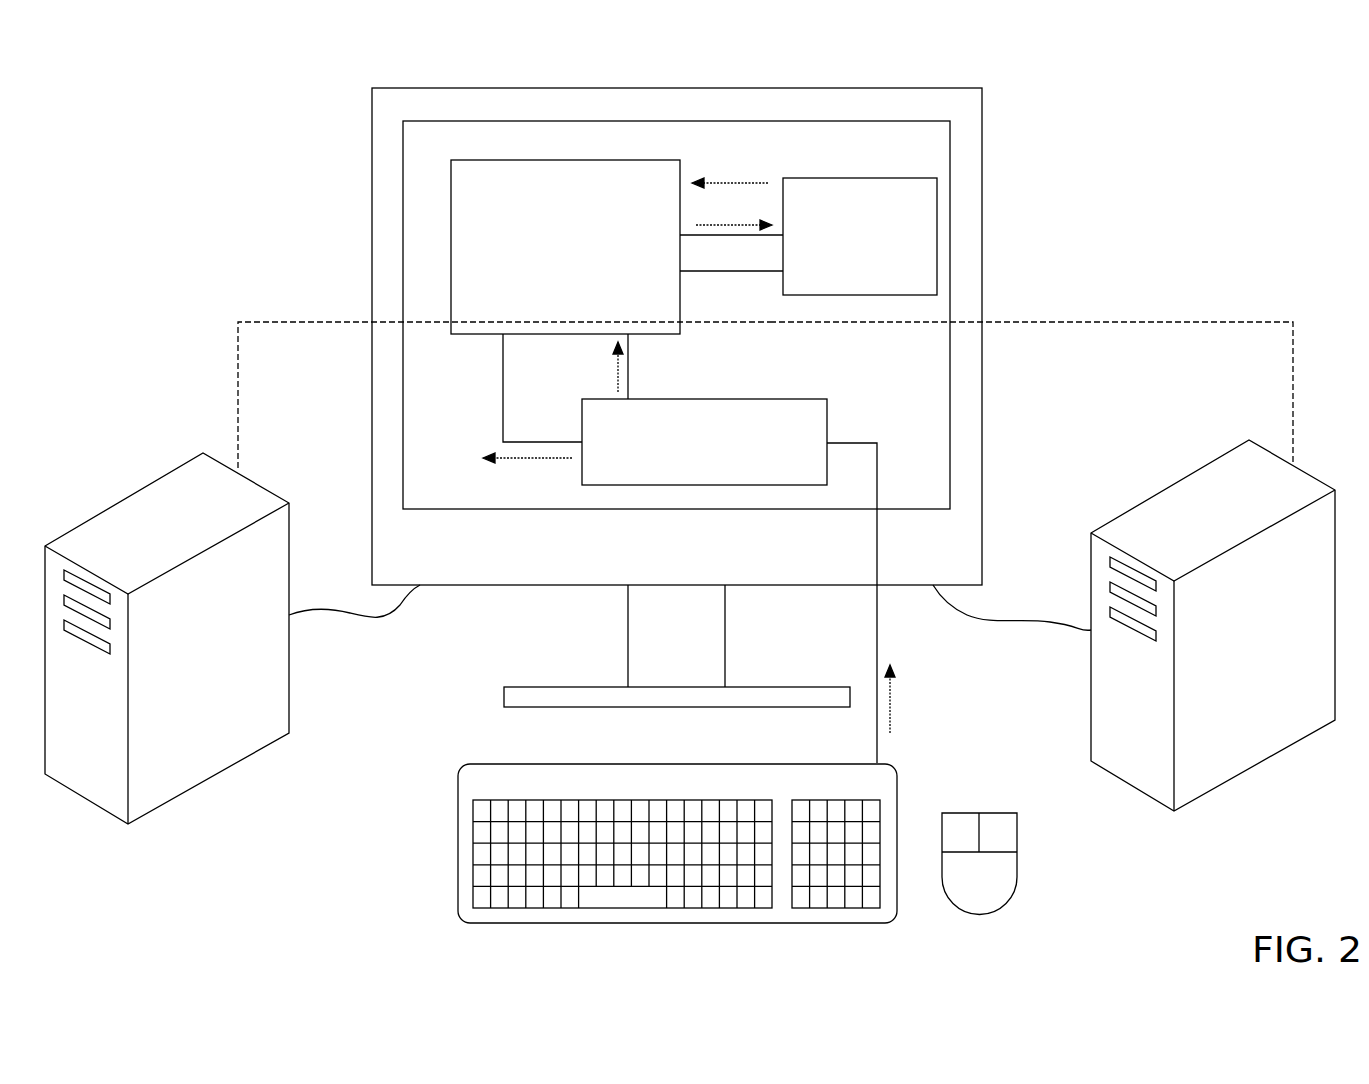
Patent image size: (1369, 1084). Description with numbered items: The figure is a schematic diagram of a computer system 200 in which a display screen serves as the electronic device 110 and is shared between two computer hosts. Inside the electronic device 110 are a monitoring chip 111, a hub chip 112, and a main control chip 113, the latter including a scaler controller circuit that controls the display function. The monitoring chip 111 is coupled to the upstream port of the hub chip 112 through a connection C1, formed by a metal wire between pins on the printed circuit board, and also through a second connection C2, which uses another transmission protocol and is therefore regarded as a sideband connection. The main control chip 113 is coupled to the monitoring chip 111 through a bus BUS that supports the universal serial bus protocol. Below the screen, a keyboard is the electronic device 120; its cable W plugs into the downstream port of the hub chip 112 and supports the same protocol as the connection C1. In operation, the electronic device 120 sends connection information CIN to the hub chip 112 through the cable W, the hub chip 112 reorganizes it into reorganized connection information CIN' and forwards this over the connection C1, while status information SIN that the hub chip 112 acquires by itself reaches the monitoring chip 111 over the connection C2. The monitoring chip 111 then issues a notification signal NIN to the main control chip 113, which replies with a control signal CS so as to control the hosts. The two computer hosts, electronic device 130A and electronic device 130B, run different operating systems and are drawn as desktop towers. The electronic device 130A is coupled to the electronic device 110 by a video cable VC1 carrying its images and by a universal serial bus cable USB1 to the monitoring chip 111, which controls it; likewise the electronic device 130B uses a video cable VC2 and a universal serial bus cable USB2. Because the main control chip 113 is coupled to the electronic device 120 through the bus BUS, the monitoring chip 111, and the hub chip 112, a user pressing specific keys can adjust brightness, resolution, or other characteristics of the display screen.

The computer system 200 is at (87, 68).
The electronic device 110 is at (400, 162).
The monitoring chip 111 is at (535, 160).
The hub chip 112 is at (827, 417).
The main control chip 113 is at (880, 178).
The electronic device 120 is at (458, 812).
The electronic device 130A is at (208, 777).
The electronic device 130B is at (1232, 778).
The universal serial bus cable USB1 is at (504, 380).
The universal serial bus cable USB2 is at (1031, 377).
The video cable VC1 is at (340, 612).
The video cable VC2 is at (1050, 620).
The cable W is at (877, 750).
The connection C1 is at (630, 380).
The connection C2 is at (503, 385).
The bus BUS is at (742, 260).
The control signal CS is at (730, 172).
The notification signal NIN is at (734, 213).
The status information SIN is at (527, 473).
The connection information CIN is at (917, 699).
The reorganized connection information CIN' is at (589, 367).